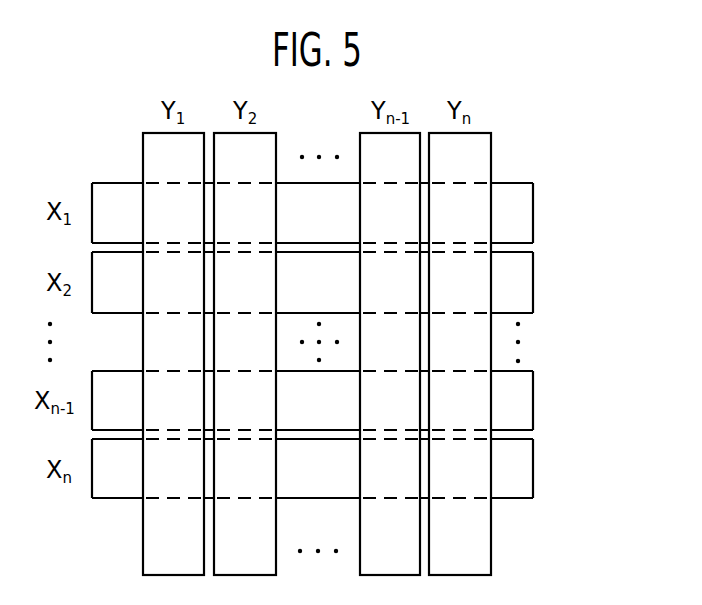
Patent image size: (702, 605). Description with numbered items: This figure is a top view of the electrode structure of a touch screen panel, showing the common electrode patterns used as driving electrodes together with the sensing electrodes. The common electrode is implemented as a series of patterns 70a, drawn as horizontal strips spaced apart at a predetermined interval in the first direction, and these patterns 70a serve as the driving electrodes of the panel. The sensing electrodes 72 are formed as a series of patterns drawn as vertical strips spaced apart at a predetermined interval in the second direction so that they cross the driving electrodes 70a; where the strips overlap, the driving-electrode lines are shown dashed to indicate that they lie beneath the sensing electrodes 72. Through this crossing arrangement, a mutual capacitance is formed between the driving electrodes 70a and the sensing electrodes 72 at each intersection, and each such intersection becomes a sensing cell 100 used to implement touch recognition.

The sensing electrode 72 is at (491, 152).
The X1 to Xn patterns 70a is at (533, 210).
The sensing cell 100 is at (355, 354).